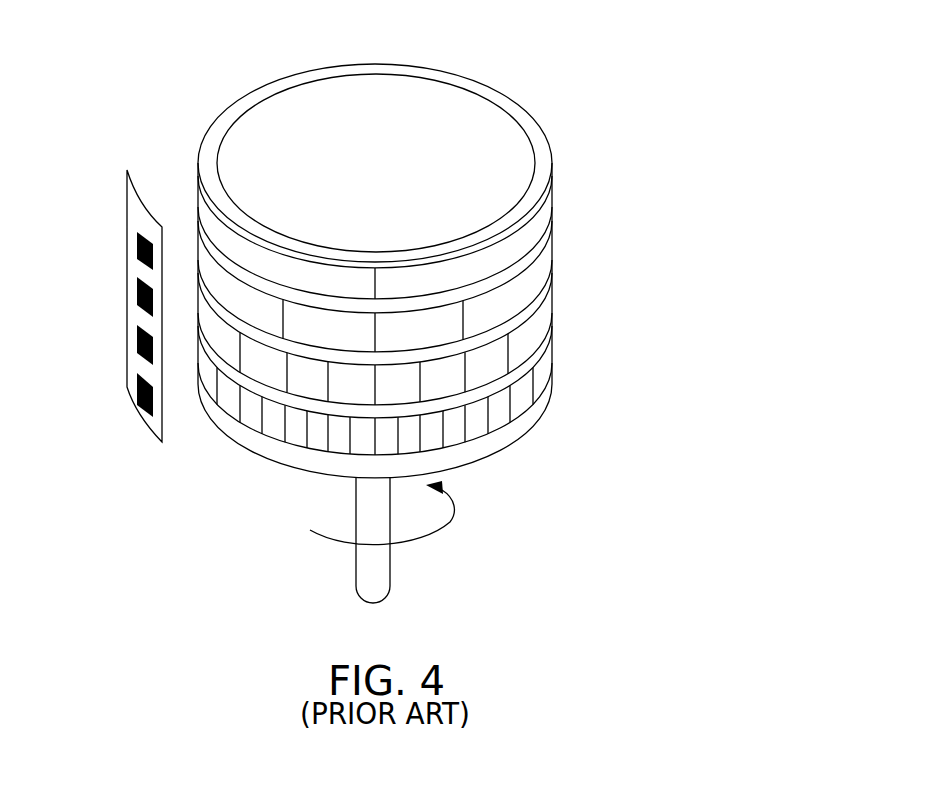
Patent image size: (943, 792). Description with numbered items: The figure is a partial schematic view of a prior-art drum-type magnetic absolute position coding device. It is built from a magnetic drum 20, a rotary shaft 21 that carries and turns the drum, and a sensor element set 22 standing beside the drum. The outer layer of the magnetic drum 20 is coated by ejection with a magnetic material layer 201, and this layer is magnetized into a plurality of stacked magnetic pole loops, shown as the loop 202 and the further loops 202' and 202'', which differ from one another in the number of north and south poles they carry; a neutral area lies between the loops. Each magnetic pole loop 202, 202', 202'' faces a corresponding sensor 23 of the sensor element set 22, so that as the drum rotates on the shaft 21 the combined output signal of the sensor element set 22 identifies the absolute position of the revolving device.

The magnetic drum 20 is at (406, 95).
The magnetic material layer 201 is at (522, 118).
The magnetic pole loop 202 is at (418, 248).
The annular magnet rings (4 and 8 poles) 202' is at (427, 313).
The annular magnet ring (16 poles) 202'' is at (427, 390).
The rotary shaft 21 is at (363, 497).
The sensor element set 22 is at (135, 219).
The sensor 23 is at (137, 388).